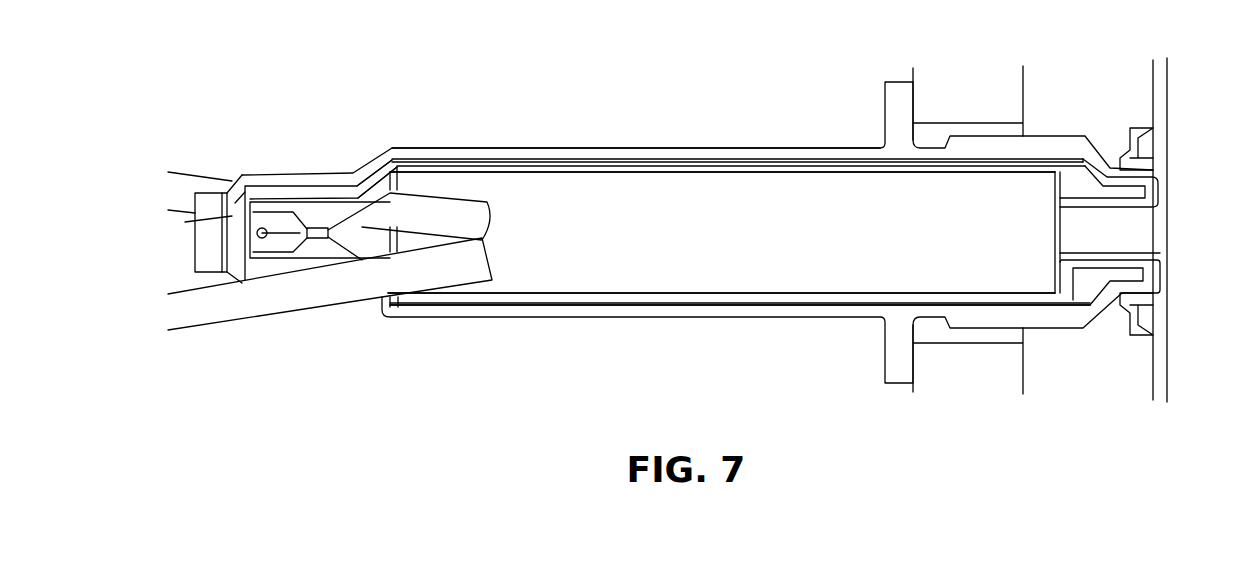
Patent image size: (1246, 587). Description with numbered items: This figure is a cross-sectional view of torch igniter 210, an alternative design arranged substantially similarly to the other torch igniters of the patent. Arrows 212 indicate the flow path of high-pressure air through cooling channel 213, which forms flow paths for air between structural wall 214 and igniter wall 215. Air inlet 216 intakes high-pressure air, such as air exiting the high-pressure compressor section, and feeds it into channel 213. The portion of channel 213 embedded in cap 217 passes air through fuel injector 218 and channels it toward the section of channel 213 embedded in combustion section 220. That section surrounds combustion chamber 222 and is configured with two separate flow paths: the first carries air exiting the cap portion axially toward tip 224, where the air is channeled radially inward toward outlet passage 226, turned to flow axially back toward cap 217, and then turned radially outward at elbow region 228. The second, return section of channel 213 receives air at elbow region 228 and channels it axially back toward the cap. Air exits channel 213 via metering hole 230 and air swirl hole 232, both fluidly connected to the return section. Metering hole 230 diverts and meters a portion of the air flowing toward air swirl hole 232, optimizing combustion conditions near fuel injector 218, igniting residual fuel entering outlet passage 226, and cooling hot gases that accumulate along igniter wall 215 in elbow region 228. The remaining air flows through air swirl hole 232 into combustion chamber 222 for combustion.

The torch igniter 210 is at (457, 86).
The arrows 212 is at (1011, 180).
The cooling channel 213 is at (643, 158).
The structural wall 214 is at (505, 147).
The igniter wall 215 is at (891, 176).
The air inlet 216 is at (218, 194).
The cap 217 is at (356, 152).
The fuel injector 218 is at (320, 248).
The combustion section 220 is at (760, 92).
The combustion chamber 222 is at (904, 232).
The tip 224 is at (1106, 128).
The outlet passage 226 is at (1106, 245).
The elbow region 228 is at (1086, 346).
The metering hole 230 is at (832, 288).
The air swirl hole 232 is at (460, 290).